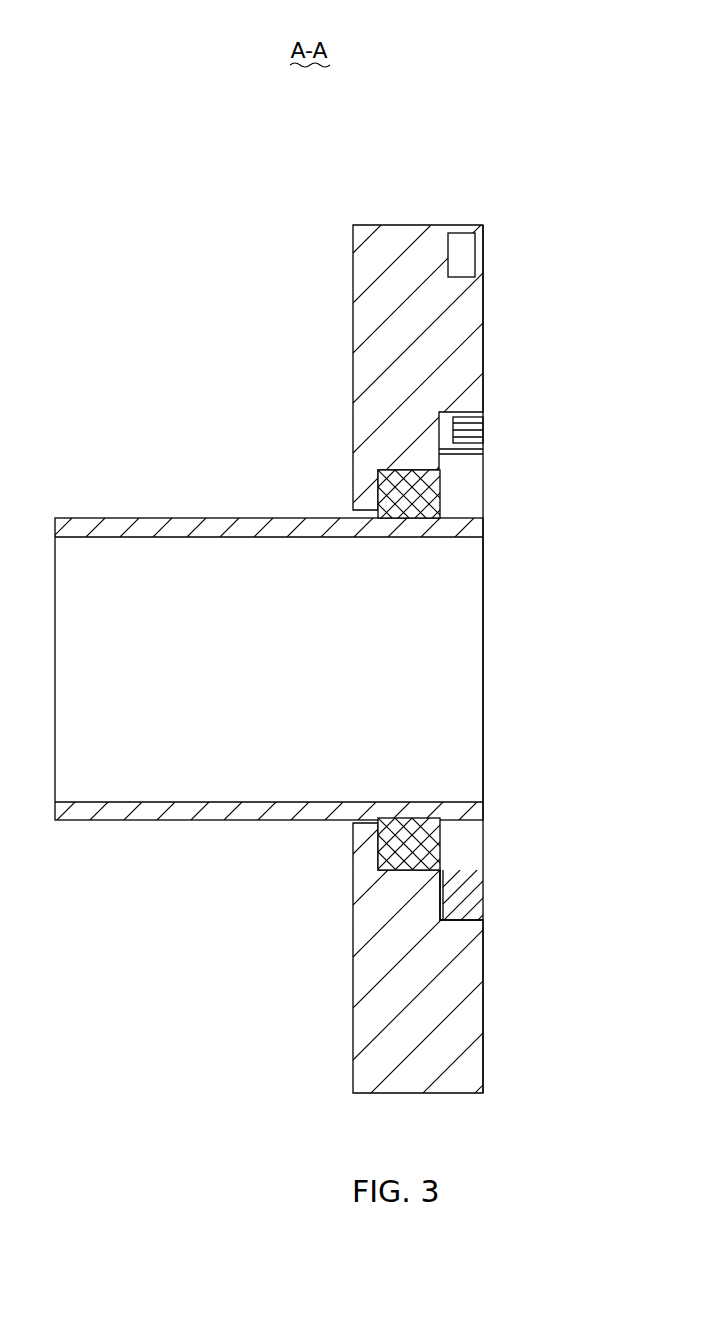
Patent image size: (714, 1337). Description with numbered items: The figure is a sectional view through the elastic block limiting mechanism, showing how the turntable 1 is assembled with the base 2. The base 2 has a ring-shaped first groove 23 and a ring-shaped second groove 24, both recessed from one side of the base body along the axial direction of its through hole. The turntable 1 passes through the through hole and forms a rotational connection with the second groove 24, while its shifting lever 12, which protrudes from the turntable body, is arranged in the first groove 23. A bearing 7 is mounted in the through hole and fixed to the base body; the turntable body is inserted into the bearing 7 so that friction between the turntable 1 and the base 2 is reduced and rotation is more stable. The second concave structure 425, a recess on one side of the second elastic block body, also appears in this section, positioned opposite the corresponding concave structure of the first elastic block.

The turntable 1 is at (460, 622).
The base 2 is at (462, 320).
The second concave structure 425 is at (483, 415).
The bearing 7 is at (425, 498).
The second groove 24 is at (376, 843).
The first groove 23 is at (443, 890).
The shifting lever 12 is at (463, 907).